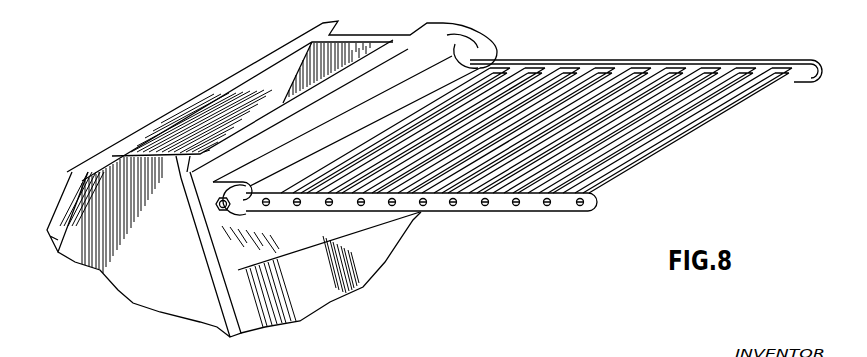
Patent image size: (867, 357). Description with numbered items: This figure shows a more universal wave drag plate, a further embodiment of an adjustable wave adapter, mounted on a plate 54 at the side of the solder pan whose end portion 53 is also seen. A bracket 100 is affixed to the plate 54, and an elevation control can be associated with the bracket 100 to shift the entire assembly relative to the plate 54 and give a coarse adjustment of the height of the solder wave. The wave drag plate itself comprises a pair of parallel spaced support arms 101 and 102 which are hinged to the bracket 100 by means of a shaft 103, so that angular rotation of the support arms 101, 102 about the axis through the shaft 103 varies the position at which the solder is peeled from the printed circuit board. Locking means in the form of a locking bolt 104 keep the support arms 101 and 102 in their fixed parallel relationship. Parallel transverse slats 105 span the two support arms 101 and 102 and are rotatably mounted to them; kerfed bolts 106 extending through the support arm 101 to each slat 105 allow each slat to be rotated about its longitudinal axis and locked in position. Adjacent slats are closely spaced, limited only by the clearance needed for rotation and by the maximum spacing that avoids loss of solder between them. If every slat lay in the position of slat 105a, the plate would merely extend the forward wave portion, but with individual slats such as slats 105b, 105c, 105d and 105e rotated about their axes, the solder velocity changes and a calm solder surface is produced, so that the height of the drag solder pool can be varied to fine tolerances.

The end flange of pan 53 is at (54, 252).
The plate 54 is at (233, 332).
The bracket 100 is at (203, 198).
The support arm 101 is at (586, 214).
The support arm 102 is at (808, 84).
The shaft 103 is at (457, 63).
The locking bolt 104 is at (217, 210).
The slat 105 is at (490, 67).
The slat 105a is at (525, 67).
The slat 105b is at (668, 70).
The slat 105c is at (703, 70).
The slat 105d is at (742, 70).
The slat 105e is at (772, 70).
The kerfed bolt 106 is at (266, 206).